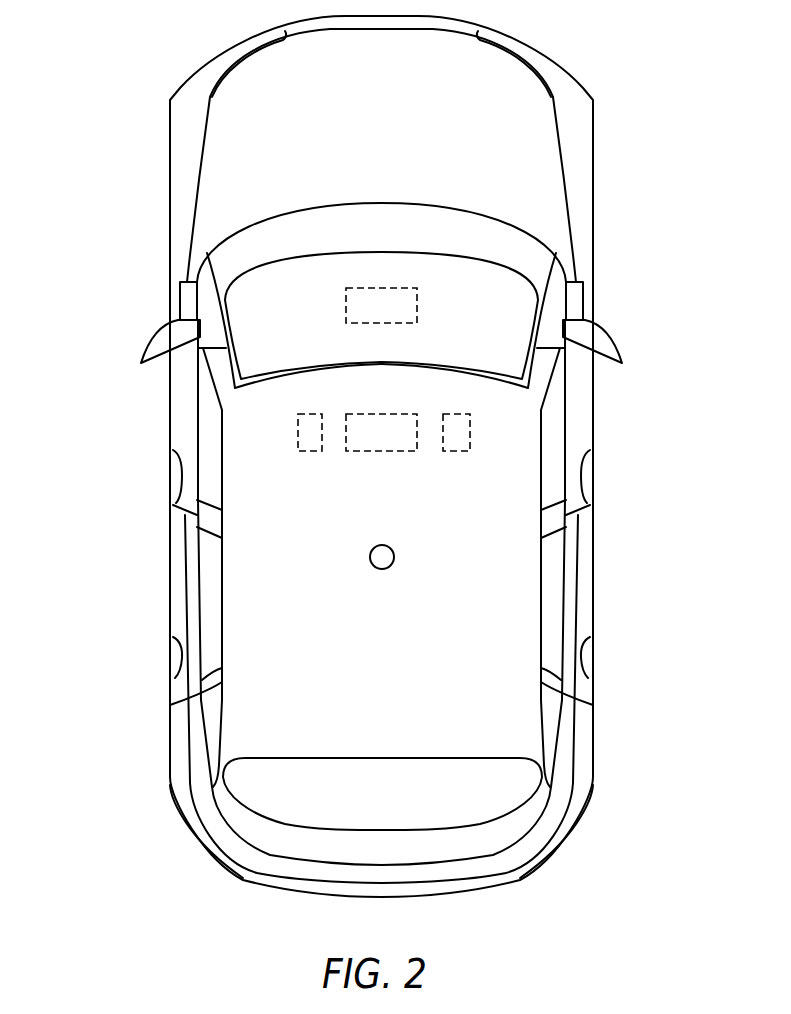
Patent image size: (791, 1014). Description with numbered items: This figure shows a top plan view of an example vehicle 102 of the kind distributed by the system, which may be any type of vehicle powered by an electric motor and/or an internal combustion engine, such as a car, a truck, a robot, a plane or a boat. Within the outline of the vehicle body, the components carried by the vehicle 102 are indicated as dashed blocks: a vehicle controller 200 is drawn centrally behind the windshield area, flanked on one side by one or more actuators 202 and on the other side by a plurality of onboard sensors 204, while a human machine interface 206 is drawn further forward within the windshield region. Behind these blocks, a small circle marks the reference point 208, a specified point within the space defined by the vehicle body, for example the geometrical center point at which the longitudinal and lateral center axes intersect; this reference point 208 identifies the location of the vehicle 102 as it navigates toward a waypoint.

The vehicle 102 is at (405, 633).
The vehicle controller 200 is at (370, 413).
The actuators 202 is at (297, 423).
The onboard sensors 204 is at (470, 423).
The human machine interface (HMI) 206 is at (418, 304).
The reference point 208 is at (370, 560).